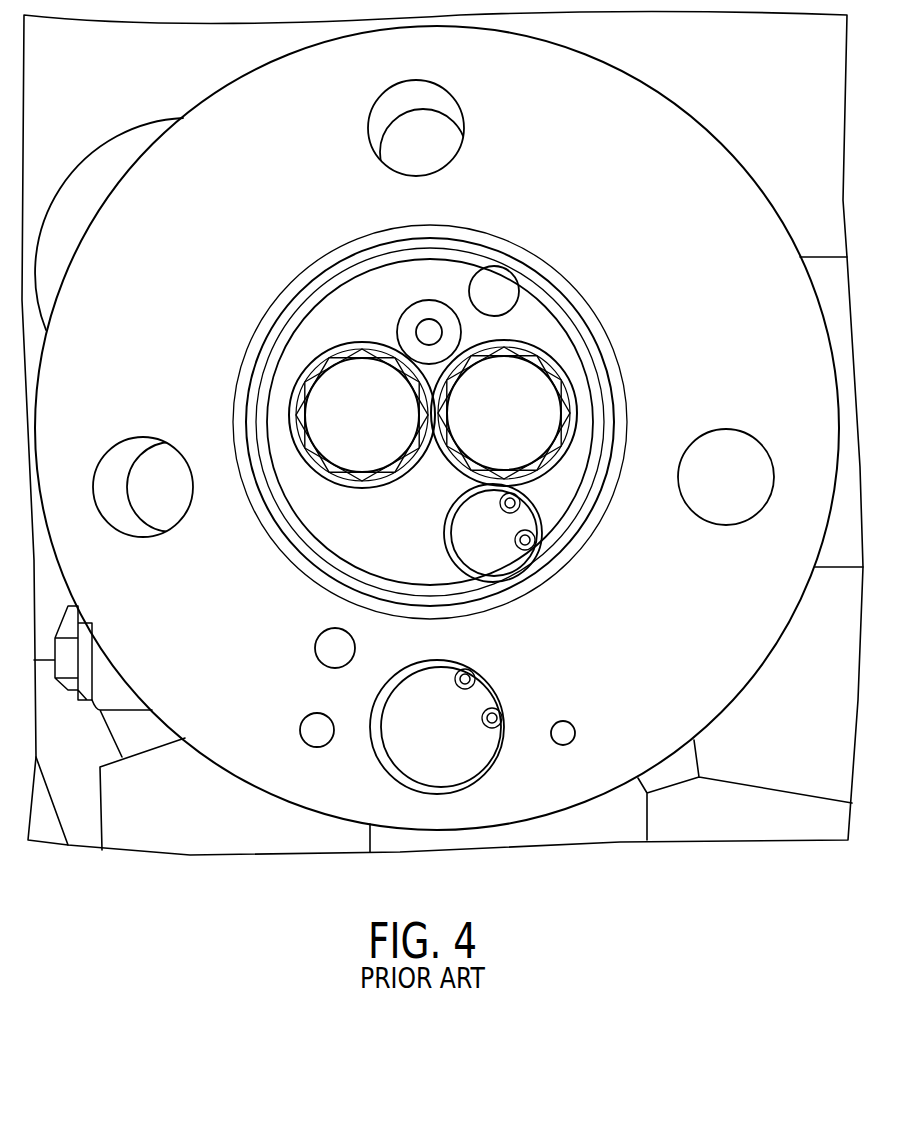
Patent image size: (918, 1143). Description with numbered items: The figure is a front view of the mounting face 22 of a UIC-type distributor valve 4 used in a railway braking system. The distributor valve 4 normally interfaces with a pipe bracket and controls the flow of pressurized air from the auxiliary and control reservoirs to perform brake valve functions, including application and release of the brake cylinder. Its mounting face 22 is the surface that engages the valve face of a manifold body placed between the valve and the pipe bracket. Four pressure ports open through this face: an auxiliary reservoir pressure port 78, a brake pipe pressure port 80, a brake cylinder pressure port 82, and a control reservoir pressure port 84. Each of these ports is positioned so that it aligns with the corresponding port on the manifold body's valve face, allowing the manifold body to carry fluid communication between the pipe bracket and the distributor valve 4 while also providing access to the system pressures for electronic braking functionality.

The UIC-type distributor valve 4 is at (642, 118).
The mounting face 22 is at (688, 253).
The auxiliary reservoir pressure port 78 is at (300, 357).
The brake pipe pressure port 80 is at (315, 646).
The brake cylinder pressure port 82 is at (468, 757).
The control reservoir pressure port 84 is at (313, 748).